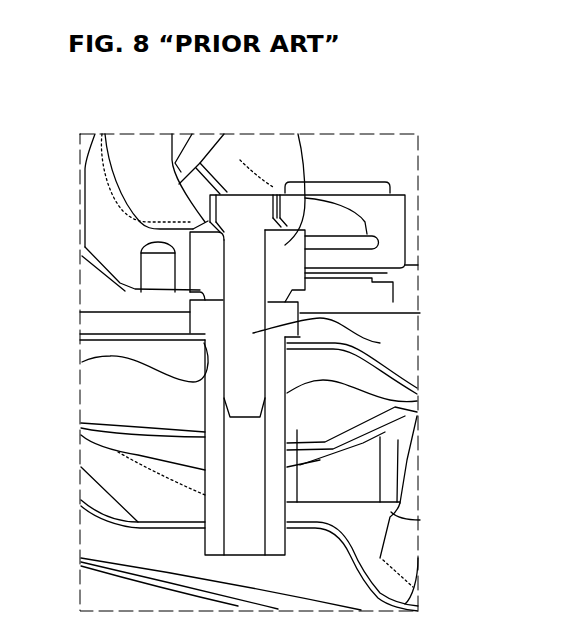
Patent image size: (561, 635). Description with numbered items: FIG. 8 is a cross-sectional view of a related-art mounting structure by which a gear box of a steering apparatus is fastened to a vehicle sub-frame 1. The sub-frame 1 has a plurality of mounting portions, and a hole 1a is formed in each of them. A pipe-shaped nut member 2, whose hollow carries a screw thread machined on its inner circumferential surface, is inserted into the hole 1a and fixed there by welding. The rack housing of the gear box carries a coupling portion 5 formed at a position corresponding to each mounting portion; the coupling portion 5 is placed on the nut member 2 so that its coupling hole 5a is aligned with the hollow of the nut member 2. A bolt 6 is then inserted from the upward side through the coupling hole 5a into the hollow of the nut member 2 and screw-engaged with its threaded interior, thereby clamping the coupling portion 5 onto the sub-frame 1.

The sub-frame 1 is at (146, 458).
The hole 1a is at (82, 362).
The nut member 2 is at (417, 401).
The coupling portion 5 is at (327, 182).
The coupling hole 5a is at (197, 157).
The bolt 6 is at (380, 343).